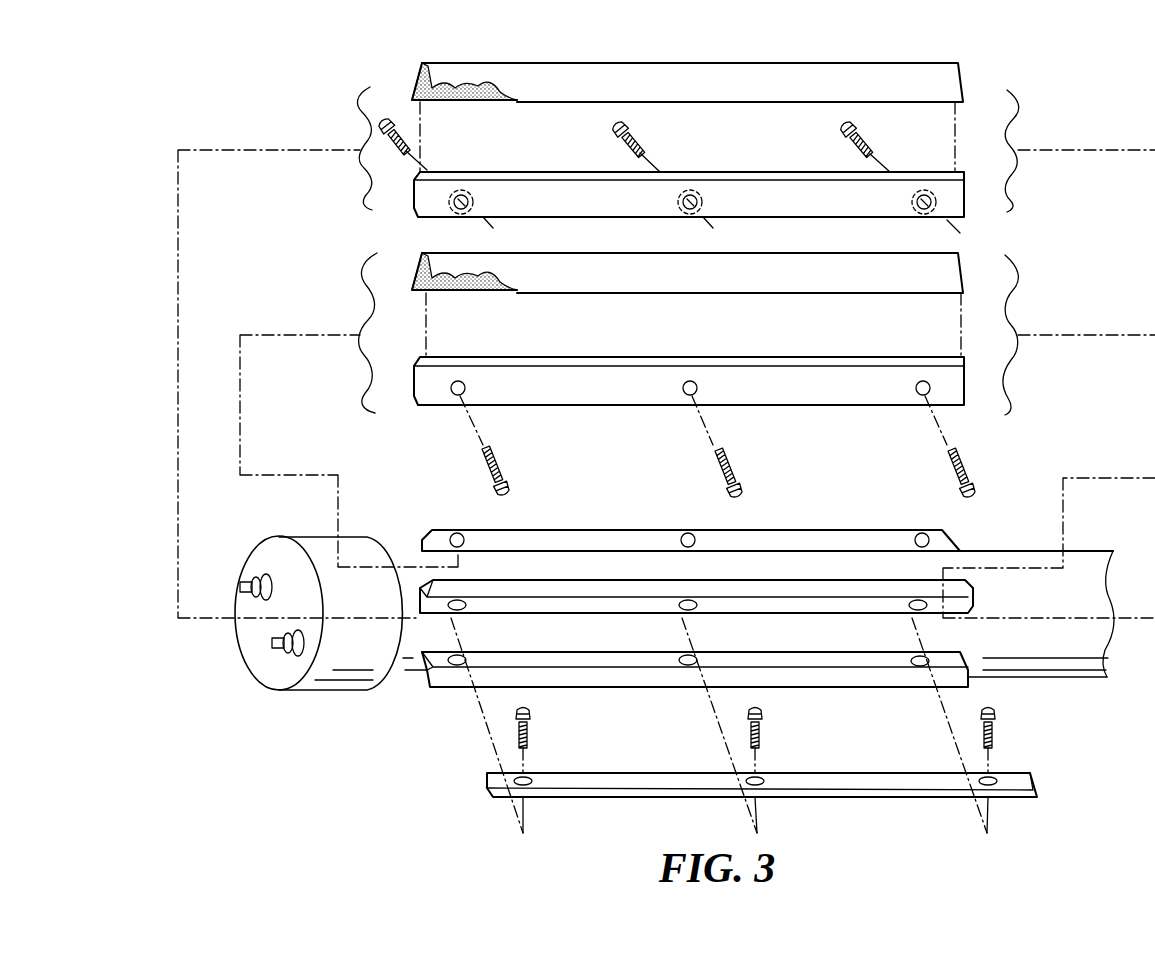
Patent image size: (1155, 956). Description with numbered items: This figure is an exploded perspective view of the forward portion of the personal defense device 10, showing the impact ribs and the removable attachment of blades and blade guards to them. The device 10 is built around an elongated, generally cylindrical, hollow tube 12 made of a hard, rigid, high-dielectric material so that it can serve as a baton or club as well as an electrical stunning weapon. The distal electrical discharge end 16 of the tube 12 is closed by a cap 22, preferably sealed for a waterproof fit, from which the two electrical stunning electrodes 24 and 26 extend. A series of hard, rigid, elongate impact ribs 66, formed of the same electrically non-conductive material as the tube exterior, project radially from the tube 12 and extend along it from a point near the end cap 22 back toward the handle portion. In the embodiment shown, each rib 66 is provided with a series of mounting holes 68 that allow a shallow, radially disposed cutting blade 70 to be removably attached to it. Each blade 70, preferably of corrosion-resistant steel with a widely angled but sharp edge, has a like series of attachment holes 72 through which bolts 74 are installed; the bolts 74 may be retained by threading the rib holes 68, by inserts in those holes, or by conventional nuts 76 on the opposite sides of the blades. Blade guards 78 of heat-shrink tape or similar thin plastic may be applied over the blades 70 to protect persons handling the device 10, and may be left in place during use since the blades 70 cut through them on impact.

The personal defense device 10 is at (360, 760).
The tube 12 is at (1057, 553).
The electrical discharge end 16 is at (408, 550).
The cap 22 is at (293, 537).
The electrical stunning electrode 24 is at (243, 578).
The electrical stunning electrode 26 is at (275, 650).
The impact rib 66 is at (482, 530).
The mounting holes 68 is at (917, 545).
The cutting blade 70 is at (537, 172).
The attachment holes 72 is at (695, 206).
The bolts 74 is at (848, 132).
The nuts 76 is at (472, 200).
The blade guards 78 is at (960, 78).